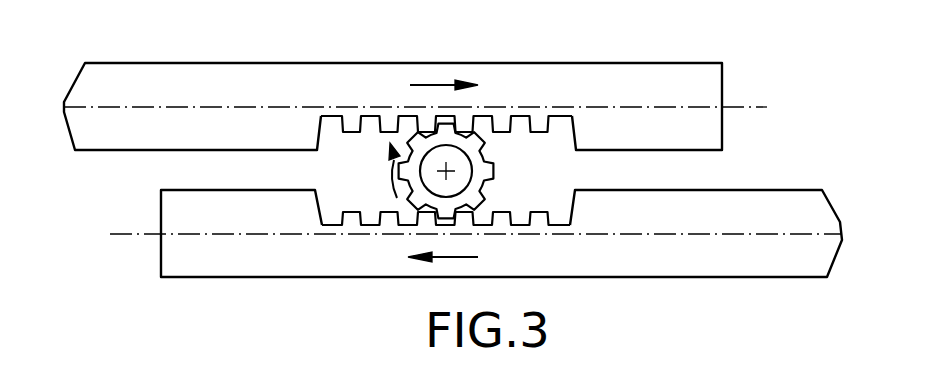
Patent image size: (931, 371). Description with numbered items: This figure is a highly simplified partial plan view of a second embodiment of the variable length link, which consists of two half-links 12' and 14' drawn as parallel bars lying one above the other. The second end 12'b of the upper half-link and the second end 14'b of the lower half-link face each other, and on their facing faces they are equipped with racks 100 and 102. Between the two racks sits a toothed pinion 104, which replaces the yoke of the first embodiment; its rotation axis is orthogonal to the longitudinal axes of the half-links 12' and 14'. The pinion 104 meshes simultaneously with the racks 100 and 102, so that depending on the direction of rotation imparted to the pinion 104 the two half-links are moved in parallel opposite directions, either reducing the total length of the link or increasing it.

The half-link 12' is at (257, 88).
The second end of half-link 12'b is at (608, 88).
The rack 100 is at (390, 122).
The rack 102 is at (392, 218).
The toothed pinion 104 is at (467, 170).
The second end of half-link 14'b is at (280, 253).
The half-link 14' is at (646, 252).